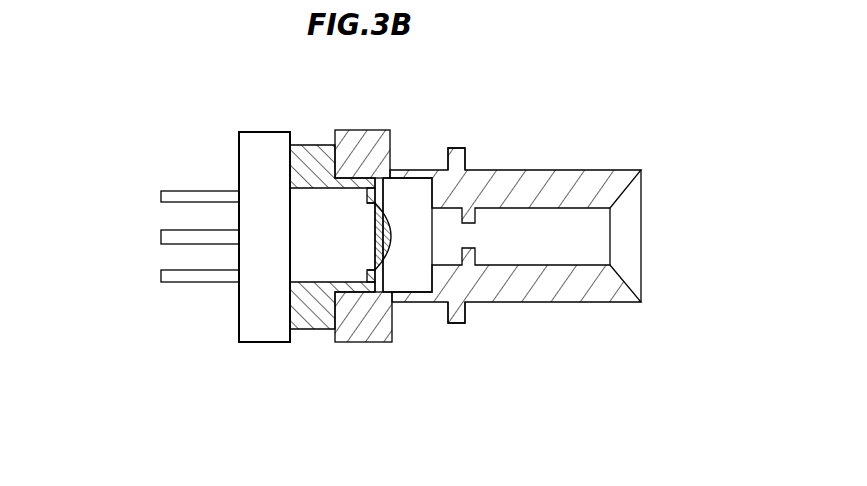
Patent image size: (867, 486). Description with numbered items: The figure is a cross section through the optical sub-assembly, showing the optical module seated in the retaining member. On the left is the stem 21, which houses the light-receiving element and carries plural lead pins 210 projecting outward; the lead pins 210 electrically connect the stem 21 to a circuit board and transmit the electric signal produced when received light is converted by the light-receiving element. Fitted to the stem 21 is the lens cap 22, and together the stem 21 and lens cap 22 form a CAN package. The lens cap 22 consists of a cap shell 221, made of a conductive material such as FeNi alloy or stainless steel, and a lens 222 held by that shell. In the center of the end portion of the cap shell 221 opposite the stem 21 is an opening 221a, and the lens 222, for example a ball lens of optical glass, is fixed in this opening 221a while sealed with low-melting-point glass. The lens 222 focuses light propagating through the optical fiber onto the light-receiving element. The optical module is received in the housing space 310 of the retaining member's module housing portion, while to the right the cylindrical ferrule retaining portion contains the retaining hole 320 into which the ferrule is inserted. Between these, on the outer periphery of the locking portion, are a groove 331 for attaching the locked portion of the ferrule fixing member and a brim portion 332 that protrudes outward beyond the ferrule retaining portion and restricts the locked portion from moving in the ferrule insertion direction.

The stem 21 is at (225, 348).
The lead pins 210 is at (168, 277).
The lens cap 22 is at (444, 294).
The cap shell 221 is at (332, 272).
The opening 221a is at (463, 172).
The lens 222 is at (388, 248).
The housing space 310 is at (407, 193).
The retaining hole 320 is at (568, 218).
The groove 331 is at (388, 220).
The brim portion 332 is at (453, 318).